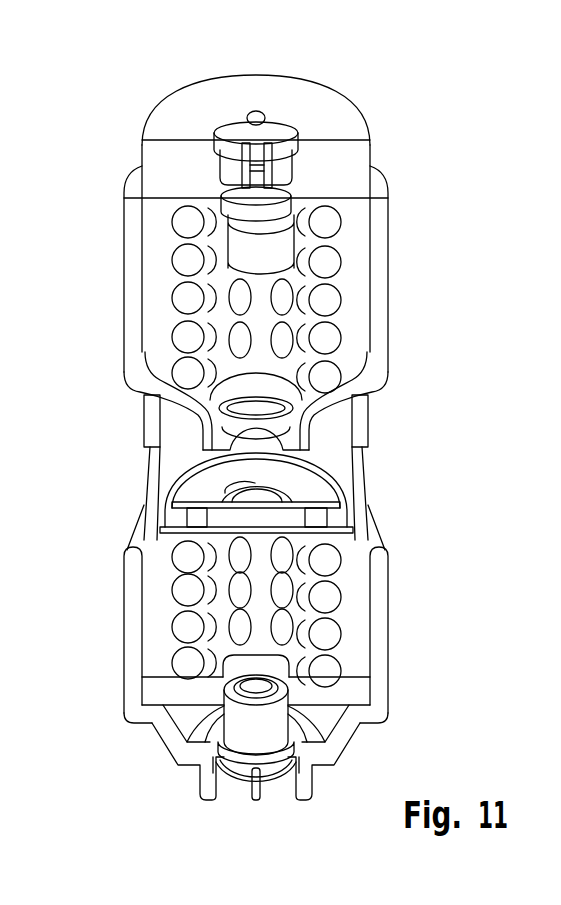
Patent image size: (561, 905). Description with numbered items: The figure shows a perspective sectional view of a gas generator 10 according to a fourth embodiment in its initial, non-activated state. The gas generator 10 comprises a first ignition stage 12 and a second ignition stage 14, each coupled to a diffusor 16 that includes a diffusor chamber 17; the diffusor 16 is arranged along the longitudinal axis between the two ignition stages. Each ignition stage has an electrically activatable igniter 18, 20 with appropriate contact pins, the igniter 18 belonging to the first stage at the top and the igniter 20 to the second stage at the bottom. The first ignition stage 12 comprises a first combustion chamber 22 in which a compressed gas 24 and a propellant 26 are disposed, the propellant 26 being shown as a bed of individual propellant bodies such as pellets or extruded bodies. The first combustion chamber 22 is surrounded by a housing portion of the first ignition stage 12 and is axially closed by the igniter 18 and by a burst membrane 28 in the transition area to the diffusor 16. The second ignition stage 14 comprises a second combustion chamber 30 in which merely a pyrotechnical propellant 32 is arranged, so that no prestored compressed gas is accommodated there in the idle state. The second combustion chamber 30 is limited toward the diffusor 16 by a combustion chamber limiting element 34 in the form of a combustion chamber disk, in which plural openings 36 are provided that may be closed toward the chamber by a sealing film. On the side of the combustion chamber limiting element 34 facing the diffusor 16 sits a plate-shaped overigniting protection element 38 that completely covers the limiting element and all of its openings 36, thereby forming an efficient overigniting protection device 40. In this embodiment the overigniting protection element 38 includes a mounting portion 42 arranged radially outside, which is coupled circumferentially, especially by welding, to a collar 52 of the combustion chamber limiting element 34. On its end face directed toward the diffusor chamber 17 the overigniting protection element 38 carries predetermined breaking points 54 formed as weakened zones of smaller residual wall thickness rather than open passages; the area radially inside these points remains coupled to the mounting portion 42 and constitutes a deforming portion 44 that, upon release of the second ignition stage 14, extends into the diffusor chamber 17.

The gas generator 10 is at (126, 82).
The first ignition stage 12 is at (420, 252).
The second ignition stage 14 is at (424, 627).
The diffusor 16 is at (281, 485).
The diffusor chamber 17 is at (190, 455).
The igniter 18 is at (274, 199).
The igniter 20 is at (255, 718).
The first combustion chamber 22 is at (362, 305).
The compressed gas 24 is at (360, 272).
The propellant 26 is at (324, 228).
The burst membrane 28 is at (262, 414).
The second combustion chamber 30 is at (365, 636).
The pyrotechnical propellant 32 is at (328, 595).
The combustion chamber limiting element 34 is at (340, 517).
The openings 36 is at (205, 516).
The overigniting protection element 38 is at (290, 463).
The overigniting protection device 40 is at (102, 520).
The mounting portion 42 is at (330, 510).
The deforming portion 44 is at (310, 495).
The collar 52 is at (245, 485).
The predetermined breaking points 54 is at (297, 472).